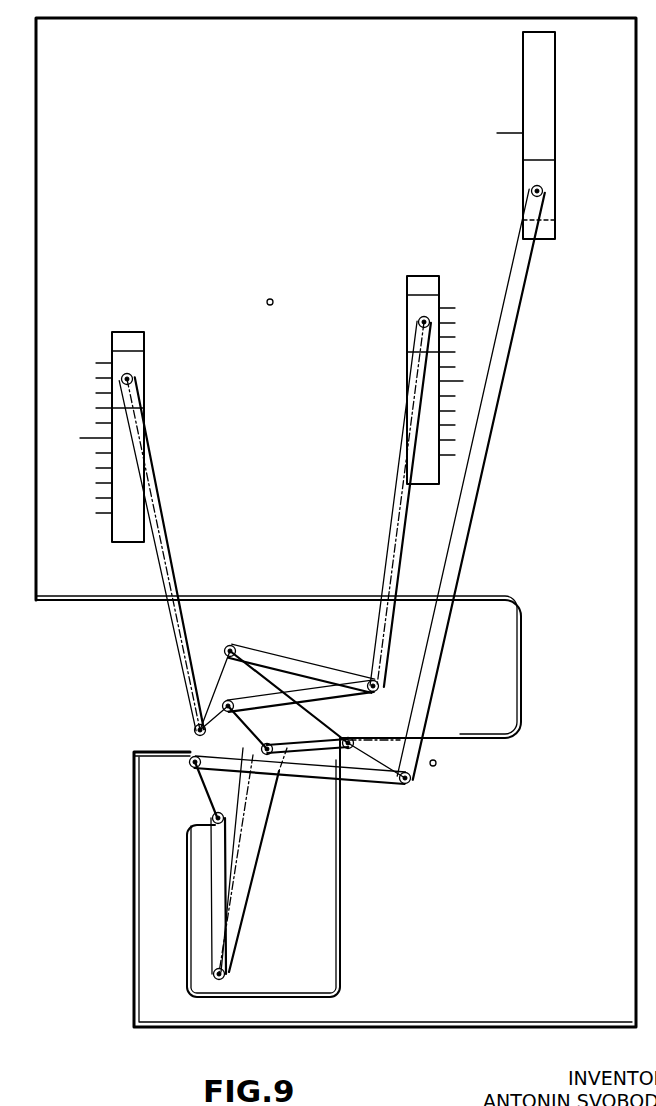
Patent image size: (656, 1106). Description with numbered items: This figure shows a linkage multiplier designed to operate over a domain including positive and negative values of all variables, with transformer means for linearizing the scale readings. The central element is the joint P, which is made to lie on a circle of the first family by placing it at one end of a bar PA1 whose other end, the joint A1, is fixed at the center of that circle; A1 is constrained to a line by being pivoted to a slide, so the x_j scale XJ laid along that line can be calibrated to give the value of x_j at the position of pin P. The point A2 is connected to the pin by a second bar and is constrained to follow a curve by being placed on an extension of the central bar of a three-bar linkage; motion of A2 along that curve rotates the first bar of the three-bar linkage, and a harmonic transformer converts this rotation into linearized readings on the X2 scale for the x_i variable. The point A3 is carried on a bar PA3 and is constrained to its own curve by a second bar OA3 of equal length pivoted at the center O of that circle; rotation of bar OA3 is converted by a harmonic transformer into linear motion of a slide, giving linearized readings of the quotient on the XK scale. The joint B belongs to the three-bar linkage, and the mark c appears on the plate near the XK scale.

The X2 scale X2 is at (476, 406).
The x_k scale XK is at (133, 527).
The x_j scale XJ is at (442, 379).
The joint A1 is at (419, 316).
The point A2 is at (226, 702).
The point A3 is at (234, 646).
The joint P is at (379, 687).
The joint β B is at (272, 746).
The pivot O is at (352, 740).
The reference mark c is at (162, 330).